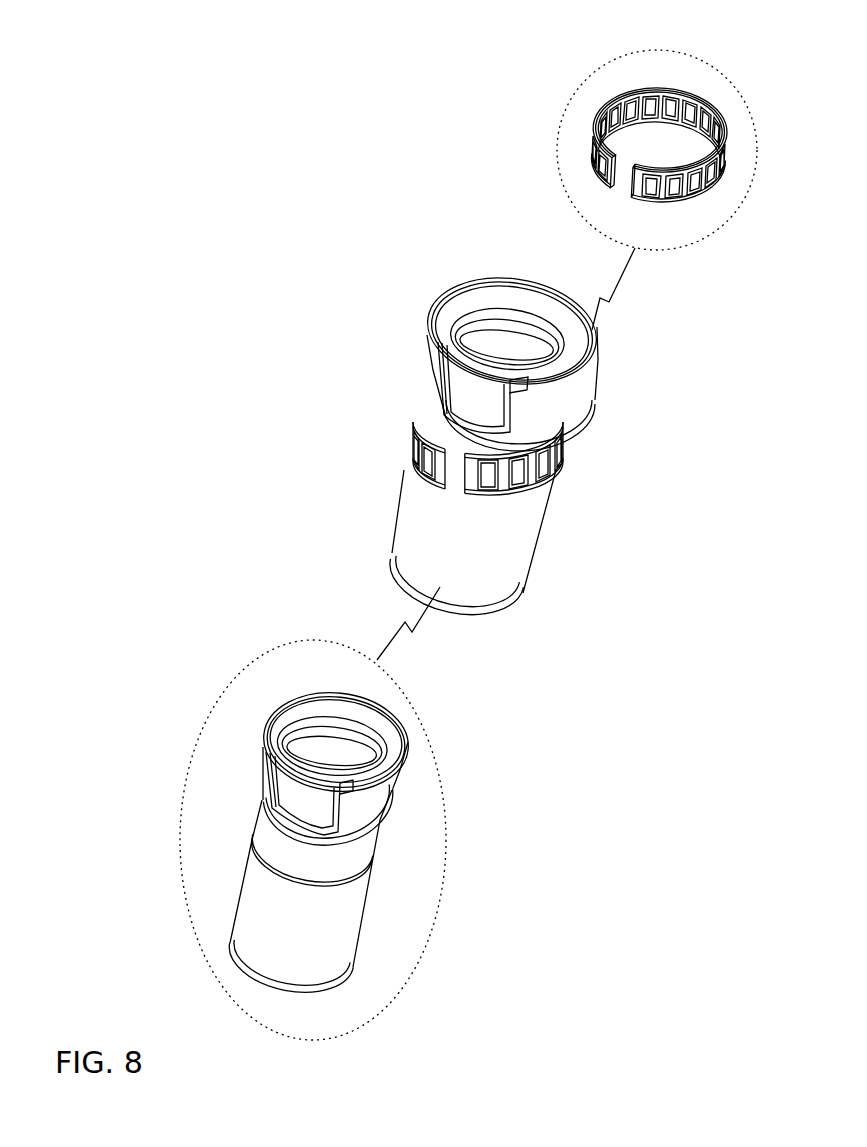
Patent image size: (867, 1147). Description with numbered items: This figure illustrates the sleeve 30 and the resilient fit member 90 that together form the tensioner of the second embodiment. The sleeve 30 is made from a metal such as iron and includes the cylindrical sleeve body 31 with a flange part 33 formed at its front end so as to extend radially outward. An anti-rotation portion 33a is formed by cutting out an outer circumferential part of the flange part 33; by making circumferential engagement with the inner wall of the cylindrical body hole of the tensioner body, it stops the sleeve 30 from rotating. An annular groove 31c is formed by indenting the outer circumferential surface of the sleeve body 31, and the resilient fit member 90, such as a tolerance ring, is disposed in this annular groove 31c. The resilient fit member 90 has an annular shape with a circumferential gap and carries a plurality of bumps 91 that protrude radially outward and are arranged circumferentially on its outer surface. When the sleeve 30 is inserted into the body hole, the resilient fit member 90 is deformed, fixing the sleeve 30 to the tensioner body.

The sleeve 30 is at (449, 299).
The sleeve body 31 is at (340, 937).
The annular groove 31c is at (358, 857).
The flange part 33 is at (393, 720).
The anti-rotation portion 33a is at (390, 775).
The resilient fit member 90 is at (588, 86).
The bumps 91 is at (712, 197).